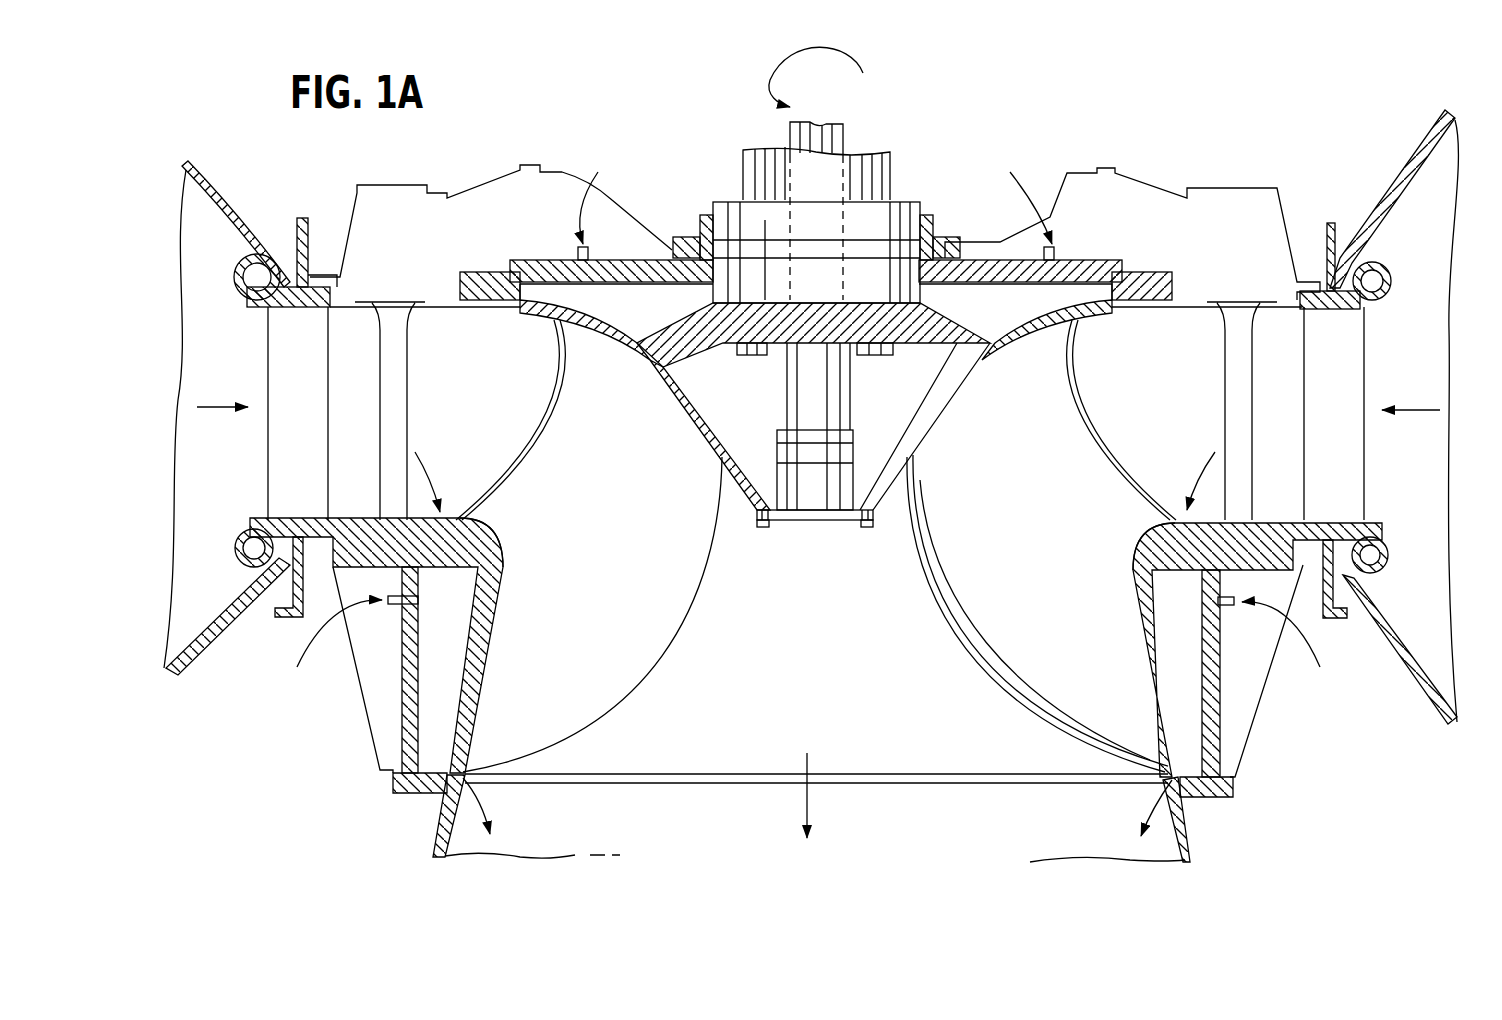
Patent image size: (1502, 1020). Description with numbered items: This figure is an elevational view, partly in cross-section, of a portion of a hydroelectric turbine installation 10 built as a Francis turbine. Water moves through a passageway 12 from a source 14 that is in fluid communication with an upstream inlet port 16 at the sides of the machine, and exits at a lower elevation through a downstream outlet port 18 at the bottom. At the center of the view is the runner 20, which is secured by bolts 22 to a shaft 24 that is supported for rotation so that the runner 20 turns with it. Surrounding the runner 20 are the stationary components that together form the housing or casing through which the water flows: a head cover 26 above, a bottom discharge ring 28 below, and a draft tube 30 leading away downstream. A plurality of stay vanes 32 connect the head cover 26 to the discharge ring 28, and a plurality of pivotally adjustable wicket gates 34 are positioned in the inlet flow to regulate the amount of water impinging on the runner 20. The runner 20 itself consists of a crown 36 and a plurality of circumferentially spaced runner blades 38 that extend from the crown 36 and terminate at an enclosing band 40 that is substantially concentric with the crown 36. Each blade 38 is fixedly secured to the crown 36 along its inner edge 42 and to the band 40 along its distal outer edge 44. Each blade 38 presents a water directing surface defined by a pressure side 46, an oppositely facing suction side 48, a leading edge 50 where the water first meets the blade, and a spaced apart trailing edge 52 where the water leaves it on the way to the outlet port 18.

The hydroelectric turbine installation 10 is at (940, 106).
The passageway 12 is at (794, 716).
The source 14 is at (198, 336).
The upstream inlet port 16 is at (334, 431).
The downstream outlet port 18 is at (707, 836).
The runner 20 is at (752, 536).
The bolts 22 is at (767, 356).
The shaft 24 is at (842, 132).
The head cover 26 is at (541, 259).
The bottom discharge ring 28 is at (402, 628).
The draft tube 30 is at (437, 823).
The stay vanes 32 is at (283, 481).
The wicket gates 34 is at (392, 402).
The crown 36 is at (637, 371).
The runner blades 38 is at (640, 653).
The enclosing band 40 is at (481, 707).
The inner edge 42 is at (703, 424).
The distal outer edge 44 is at (494, 627).
The pressure side 46 is at (999, 541).
The suction side 48 is at (584, 576).
The leading edge 50 is at (532, 461).
The trailing edge 52 is at (962, 640).